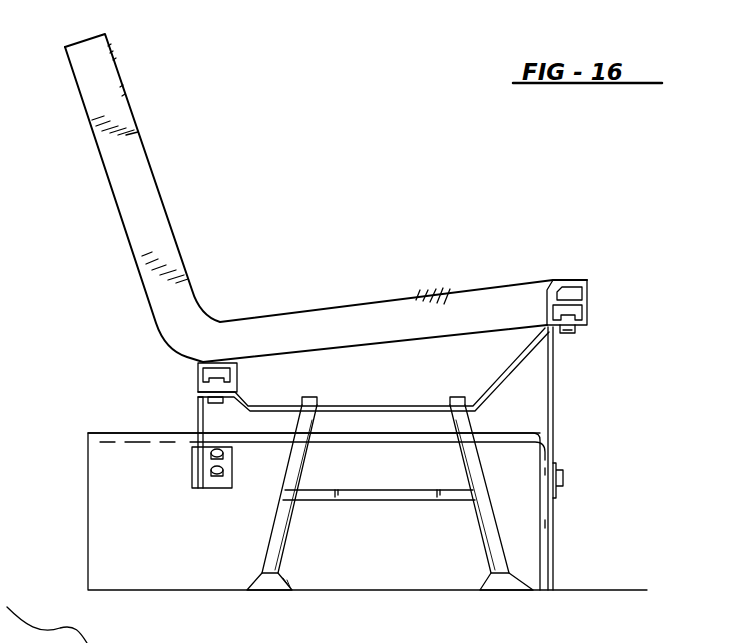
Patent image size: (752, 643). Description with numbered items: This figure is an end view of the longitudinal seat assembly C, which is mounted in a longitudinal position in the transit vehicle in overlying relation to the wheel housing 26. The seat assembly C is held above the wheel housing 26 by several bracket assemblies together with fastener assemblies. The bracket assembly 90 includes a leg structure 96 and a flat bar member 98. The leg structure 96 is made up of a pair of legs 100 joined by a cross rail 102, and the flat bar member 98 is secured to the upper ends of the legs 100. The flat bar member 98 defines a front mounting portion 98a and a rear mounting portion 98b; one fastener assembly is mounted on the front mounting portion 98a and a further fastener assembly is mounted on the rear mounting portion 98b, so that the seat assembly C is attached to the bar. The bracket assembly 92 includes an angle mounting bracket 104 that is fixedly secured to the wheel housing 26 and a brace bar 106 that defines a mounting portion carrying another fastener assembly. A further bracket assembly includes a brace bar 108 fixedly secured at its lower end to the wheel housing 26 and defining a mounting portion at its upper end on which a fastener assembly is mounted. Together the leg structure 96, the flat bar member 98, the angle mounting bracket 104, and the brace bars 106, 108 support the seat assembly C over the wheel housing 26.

The longitudinal seat assembly C is at (373, 208).
The wheel housing 26 is at (533, 535).
The bracket assembly 90 is at (268, 535).
The bracket assembly 92 is at (181, 472).
The leg structure 96 is at (482, 535).
The flat bar member 98 is at (513, 357).
The front mounting portion 98a is at (590, 337).
The rear mounting portion 98b is at (186, 398).
The legs 100 is at (298, 466).
The cross rail 102 is at (390, 498).
The angle mounting bracket 104 is at (233, 472).
The brace bar 106 is at (196, 413).
The brace bar 108 is at (554, 423).